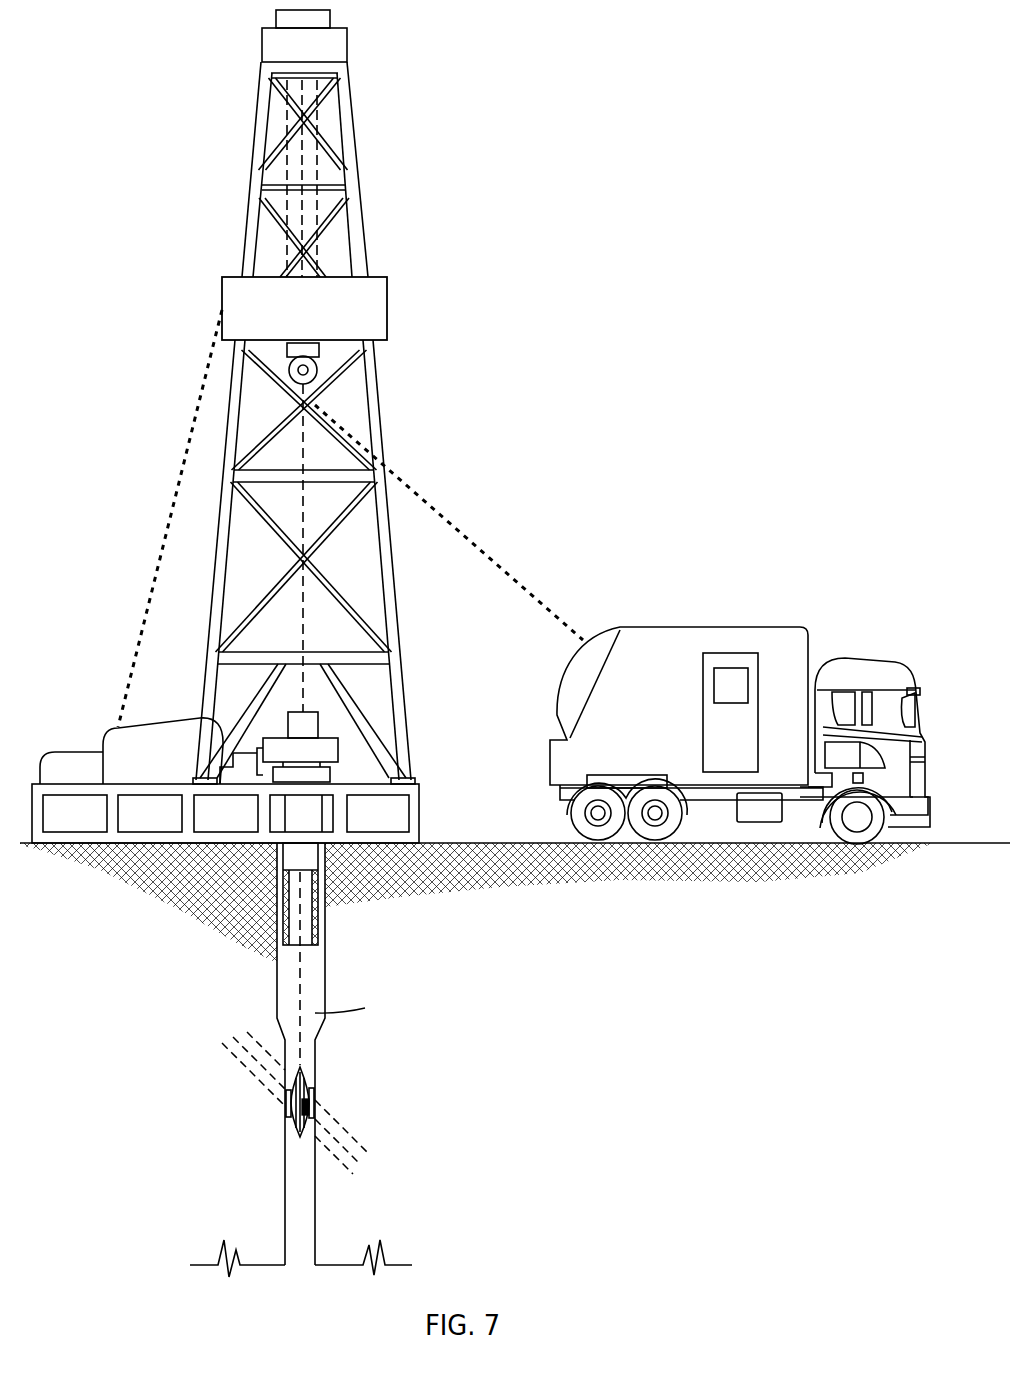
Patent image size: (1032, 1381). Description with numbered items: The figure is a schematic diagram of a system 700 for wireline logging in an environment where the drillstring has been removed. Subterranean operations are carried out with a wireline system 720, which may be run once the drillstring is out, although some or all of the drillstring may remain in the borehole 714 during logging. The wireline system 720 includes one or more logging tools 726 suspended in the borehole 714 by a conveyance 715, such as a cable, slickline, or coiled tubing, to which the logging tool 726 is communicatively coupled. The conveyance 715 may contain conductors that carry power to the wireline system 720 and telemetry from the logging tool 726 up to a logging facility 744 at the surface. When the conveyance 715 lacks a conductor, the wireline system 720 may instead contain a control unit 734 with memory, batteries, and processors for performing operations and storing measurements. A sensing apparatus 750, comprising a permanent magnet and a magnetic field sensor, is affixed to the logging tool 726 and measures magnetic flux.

The system 700 is at (560, 416).
The logging facility 744 is at (703, 627).
The control unit 734 is at (318, 736).
The conveyance 715 is at (307, 928).
The wireline system 720 is at (303, 1097).
The sensing apparatus 750 is at (297, 1113).
The logging tool 726 is at (296, 1117).
The borehole 714 is at (285, 1207).